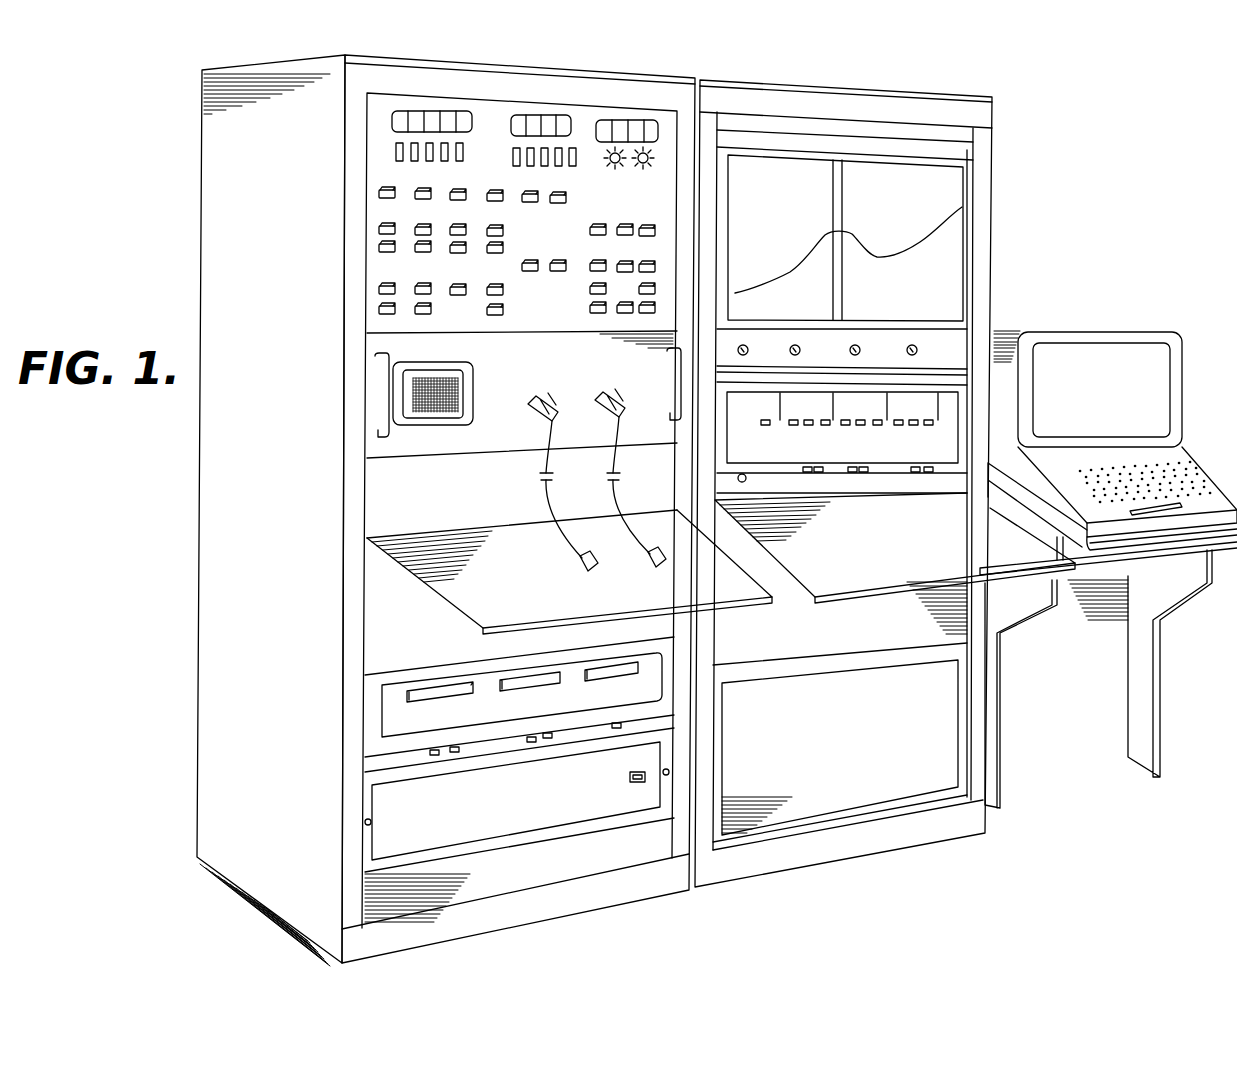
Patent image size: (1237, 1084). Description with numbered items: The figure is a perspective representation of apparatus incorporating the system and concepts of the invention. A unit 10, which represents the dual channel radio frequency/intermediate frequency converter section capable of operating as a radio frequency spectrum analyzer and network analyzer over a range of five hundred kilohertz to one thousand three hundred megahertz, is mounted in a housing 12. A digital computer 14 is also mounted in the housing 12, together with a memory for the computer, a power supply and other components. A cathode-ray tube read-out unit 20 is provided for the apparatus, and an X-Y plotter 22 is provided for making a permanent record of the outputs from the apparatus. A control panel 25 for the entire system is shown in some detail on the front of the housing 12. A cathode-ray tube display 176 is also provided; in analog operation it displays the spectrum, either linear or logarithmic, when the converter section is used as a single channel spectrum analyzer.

The unit 10 is at (387, 443).
The housing 12 is at (207, 754).
The digital computer 14 is at (957, 405).
The cathode-ray tube read-out unit 20 is at (1082, 356).
The X-Y plotter 22 is at (943, 273).
The control panel 25 is at (383, 167).
The cathode-ray tube display 176 is at (418, 392).